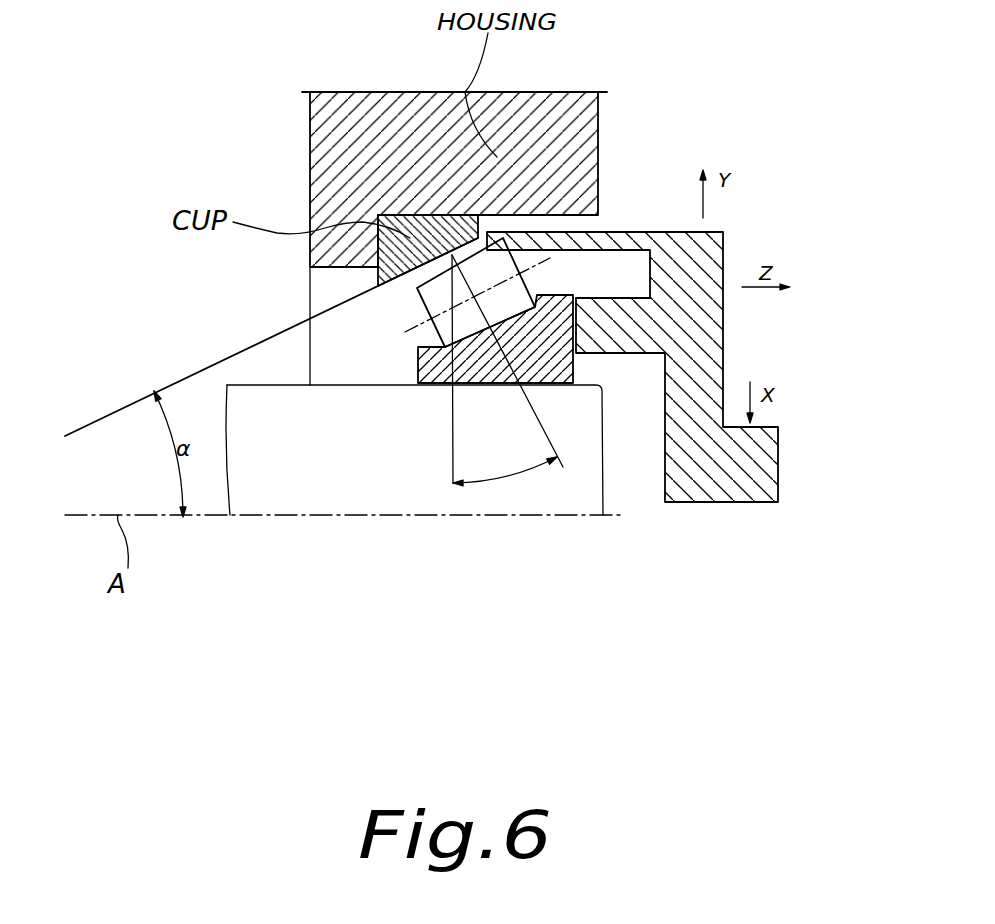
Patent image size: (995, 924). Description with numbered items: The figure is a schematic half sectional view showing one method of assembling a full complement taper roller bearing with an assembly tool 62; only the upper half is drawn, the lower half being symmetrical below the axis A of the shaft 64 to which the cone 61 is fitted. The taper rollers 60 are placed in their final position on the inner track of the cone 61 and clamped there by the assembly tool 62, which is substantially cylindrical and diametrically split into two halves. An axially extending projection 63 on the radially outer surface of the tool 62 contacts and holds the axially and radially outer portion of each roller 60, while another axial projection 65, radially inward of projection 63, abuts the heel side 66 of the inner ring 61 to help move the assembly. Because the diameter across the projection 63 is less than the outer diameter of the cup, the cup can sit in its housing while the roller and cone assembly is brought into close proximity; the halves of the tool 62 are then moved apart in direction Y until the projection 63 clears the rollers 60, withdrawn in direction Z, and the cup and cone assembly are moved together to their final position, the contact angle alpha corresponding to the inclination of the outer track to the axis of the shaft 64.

The taper rollers 60 is at (498, 240).
The cone 61 is at (433, 370).
The assembly tool 62 is at (677, 342).
The axially extending projection 63 is at (605, 240).
The shaft 64 is at (273, 478).
The axial extending projection 65 is at (630, 328).
The heel side 66 is at (576, 372).